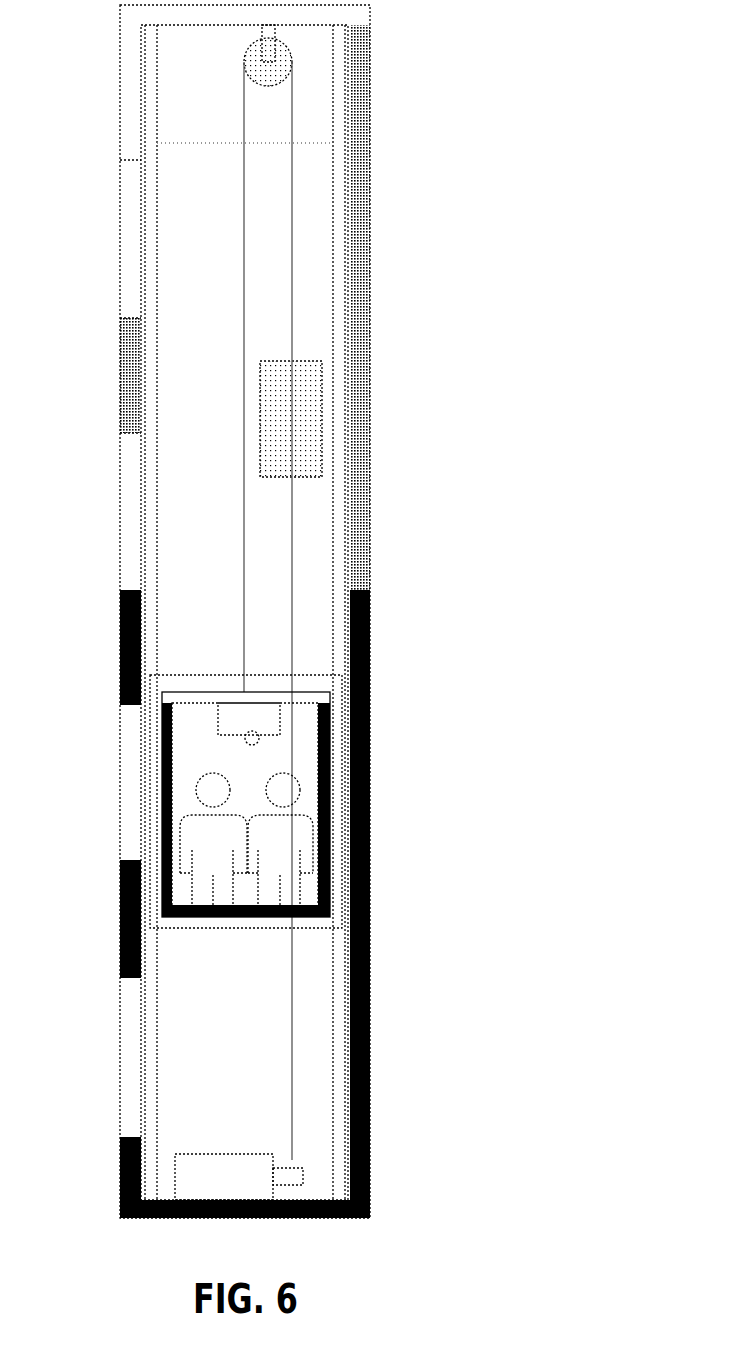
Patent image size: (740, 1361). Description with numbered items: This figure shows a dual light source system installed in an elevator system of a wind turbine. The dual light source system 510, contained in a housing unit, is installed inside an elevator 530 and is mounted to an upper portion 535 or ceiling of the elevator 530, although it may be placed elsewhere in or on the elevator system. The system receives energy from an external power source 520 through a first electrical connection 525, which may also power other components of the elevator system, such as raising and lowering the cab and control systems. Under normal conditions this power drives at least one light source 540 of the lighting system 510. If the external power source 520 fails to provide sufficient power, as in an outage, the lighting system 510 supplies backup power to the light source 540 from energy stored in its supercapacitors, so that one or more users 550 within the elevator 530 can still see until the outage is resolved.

The dual light source system 510 is at (166, 729).
The external power source 520 is at (176, 1155).
The first electrical connection 525 is at (367, 611).
The elevator 530 is at (303, 749).
The upper portion 535 is at (182, 766).
The light source 540 is at (343, 713).
The users 550 is at (187, 839).